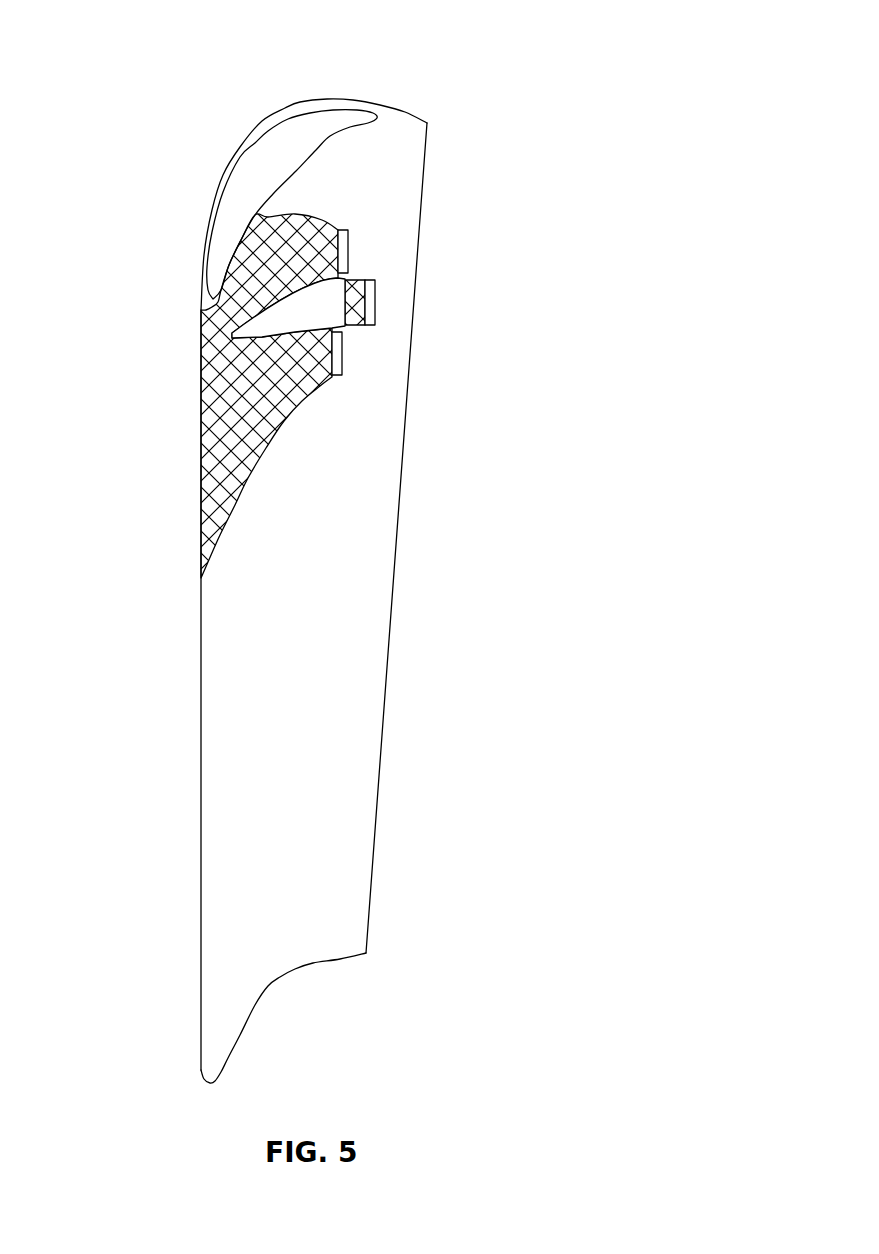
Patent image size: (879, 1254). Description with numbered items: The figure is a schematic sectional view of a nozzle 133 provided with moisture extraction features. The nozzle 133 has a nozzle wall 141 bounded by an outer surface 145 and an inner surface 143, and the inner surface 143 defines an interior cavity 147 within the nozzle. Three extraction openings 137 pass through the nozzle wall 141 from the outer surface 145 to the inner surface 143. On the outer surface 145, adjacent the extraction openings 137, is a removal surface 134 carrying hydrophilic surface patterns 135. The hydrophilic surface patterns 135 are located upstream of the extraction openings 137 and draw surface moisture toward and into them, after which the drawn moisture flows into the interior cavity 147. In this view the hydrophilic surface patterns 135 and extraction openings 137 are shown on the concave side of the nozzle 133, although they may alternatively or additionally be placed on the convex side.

The nozzle 133 is at (372, 545).
The removal surface 134 is at (275, 320).
The hydrophilic surface patterns 135 is at (226, 315).
The extraction openings 137 is at (348, 245).
The nozzle wall 141 is at (346, 801).
The inner surface 143 is at (310, 125).
The outer surface 145 is at (405, 157).
The interior cavity 147 is at (245, 204).